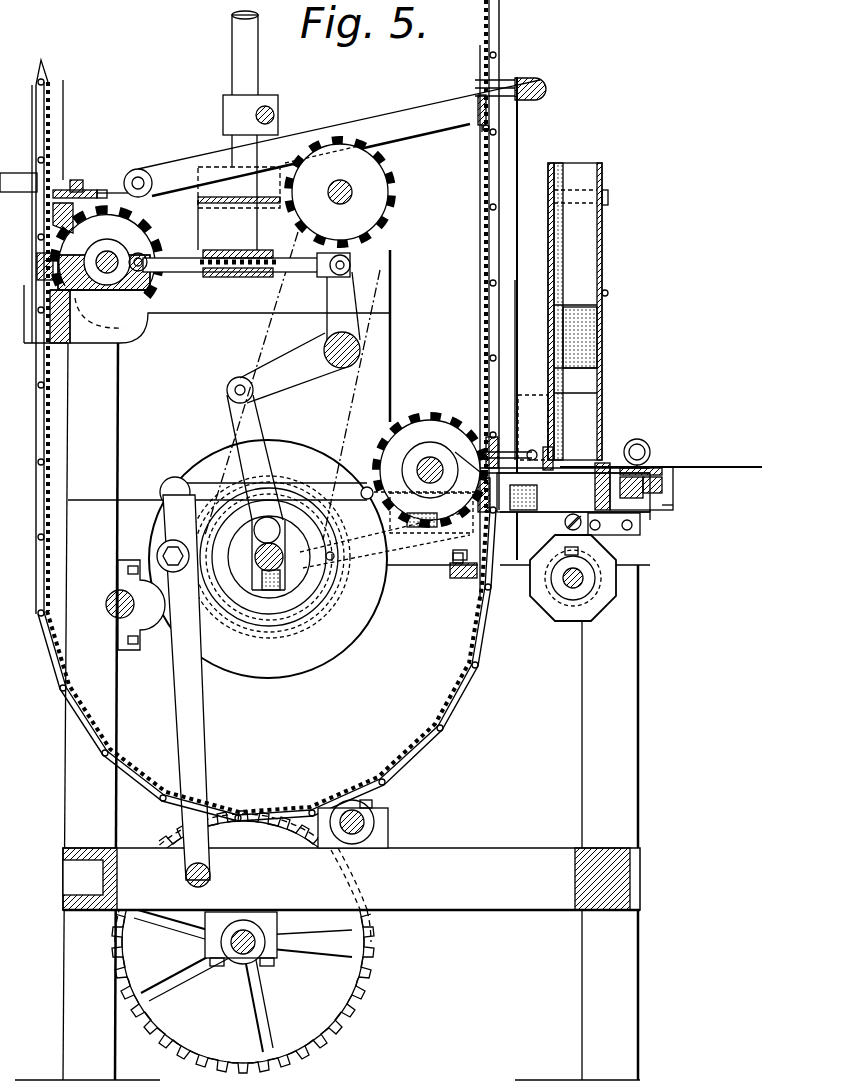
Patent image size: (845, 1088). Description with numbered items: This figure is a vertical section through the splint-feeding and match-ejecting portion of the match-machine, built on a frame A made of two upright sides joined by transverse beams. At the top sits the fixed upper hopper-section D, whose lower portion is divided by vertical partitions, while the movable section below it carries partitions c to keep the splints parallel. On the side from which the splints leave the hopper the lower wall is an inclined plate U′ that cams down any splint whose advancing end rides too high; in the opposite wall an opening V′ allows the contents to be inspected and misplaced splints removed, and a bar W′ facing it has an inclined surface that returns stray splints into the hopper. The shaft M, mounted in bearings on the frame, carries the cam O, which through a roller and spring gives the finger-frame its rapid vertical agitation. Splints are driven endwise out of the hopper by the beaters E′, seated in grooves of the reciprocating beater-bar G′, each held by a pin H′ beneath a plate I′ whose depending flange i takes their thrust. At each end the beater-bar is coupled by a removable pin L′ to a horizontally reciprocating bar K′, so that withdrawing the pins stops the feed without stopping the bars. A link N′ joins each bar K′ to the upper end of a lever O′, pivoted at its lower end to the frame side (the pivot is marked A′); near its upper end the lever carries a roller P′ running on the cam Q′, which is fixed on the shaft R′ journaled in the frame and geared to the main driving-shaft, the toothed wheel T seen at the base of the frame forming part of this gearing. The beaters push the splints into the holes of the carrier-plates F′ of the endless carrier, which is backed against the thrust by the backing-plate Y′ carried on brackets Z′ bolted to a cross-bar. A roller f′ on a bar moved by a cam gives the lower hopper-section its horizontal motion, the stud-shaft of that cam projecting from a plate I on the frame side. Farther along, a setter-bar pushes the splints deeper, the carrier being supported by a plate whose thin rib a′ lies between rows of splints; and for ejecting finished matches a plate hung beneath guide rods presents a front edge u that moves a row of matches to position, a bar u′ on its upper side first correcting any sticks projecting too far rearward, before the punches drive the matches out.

The driving gear wheel T is at (242, 930).
The frame A is at (327, 711).
The cam Q′ is at (268, 559).
The shaft R′ is at (290, 598).
The roller i is at (333, 556).
The rib a′ is at (485, 130).
The front edge u is at (47, 196).
The bar u′ is at (77, 180).
The fixed hopper-section D is at (560, 251).
The inclined plate U′ is at (535, 432).
The ejectors or beaters E′ is at (568, 470).
The partitions c is at (661, 435).
The opening V′ is at (600, 460).
The bar W′ is at (630, 455).
The pin L′ is at (640, 445).
The plate I′ is at (645, 468).
The plate I is at (700, 466).
The pin H′ is at (664, 490).
The horizontally-reciprocating bar K′ is at (675, 506).
The beater-bar G′ is at (648, 502).
The cam O is at (548, 592).
The shaft M is at (583, 578).
The backing-plate Y′ is at (464, 453).
The brackets Z′ is at (465, 542).
The rod or link N′ is at (303, 483).
The lever O′ is at (200, 716).
The roller P′ is at (160, 553).
The bracket A′ is at (108, 604).
The carrier-plates F′ is at (500, 32).
The roller f′ is at (486, 20).